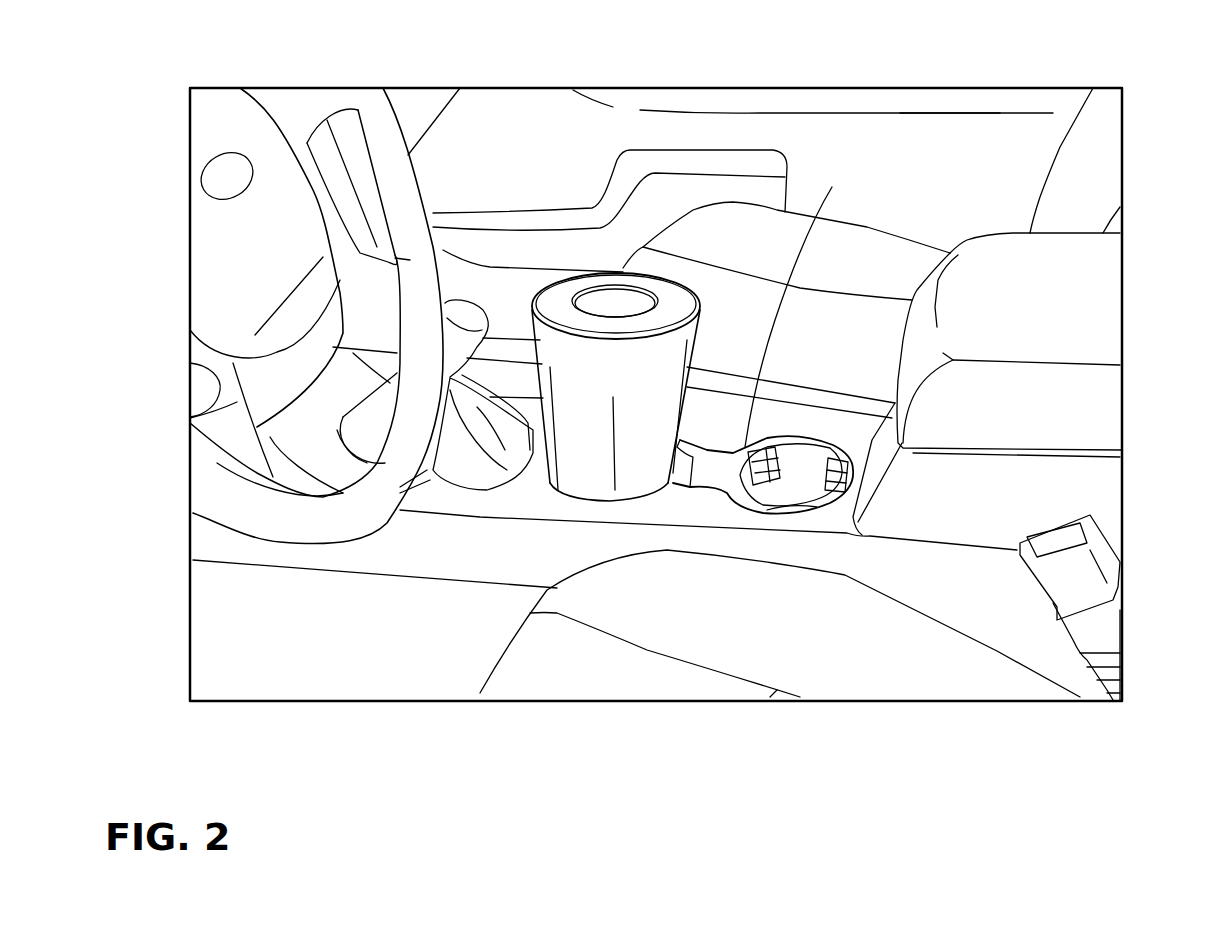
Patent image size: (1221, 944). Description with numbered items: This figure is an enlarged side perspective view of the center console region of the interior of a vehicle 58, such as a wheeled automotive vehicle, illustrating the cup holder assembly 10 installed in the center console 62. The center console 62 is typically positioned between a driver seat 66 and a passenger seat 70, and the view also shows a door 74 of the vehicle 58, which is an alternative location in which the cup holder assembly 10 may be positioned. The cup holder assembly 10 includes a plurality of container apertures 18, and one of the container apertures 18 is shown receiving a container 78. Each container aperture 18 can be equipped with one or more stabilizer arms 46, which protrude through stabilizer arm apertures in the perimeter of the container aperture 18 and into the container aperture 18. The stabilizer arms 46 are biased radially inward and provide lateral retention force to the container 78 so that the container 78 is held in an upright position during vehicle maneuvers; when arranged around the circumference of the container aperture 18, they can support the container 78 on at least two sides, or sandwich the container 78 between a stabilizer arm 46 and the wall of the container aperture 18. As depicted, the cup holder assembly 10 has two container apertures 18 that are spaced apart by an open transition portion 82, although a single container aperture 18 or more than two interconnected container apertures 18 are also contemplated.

The cup holder assembly 10 is at (690, 492).
The container aperture 18 is at (748, 445).
The stabilizer arm 46 is at (828, 447).
The vehicle 58 is at (155, 205).
The center console 62 is at (1008, 480).
The driver seat 66 is at (962, 667).
The passenger seat 70 is at (1097, 160).
The door 74 is at (923, 157).
The container 78 is at (598, 388).
The open transition portion 82 is at (732, 505).